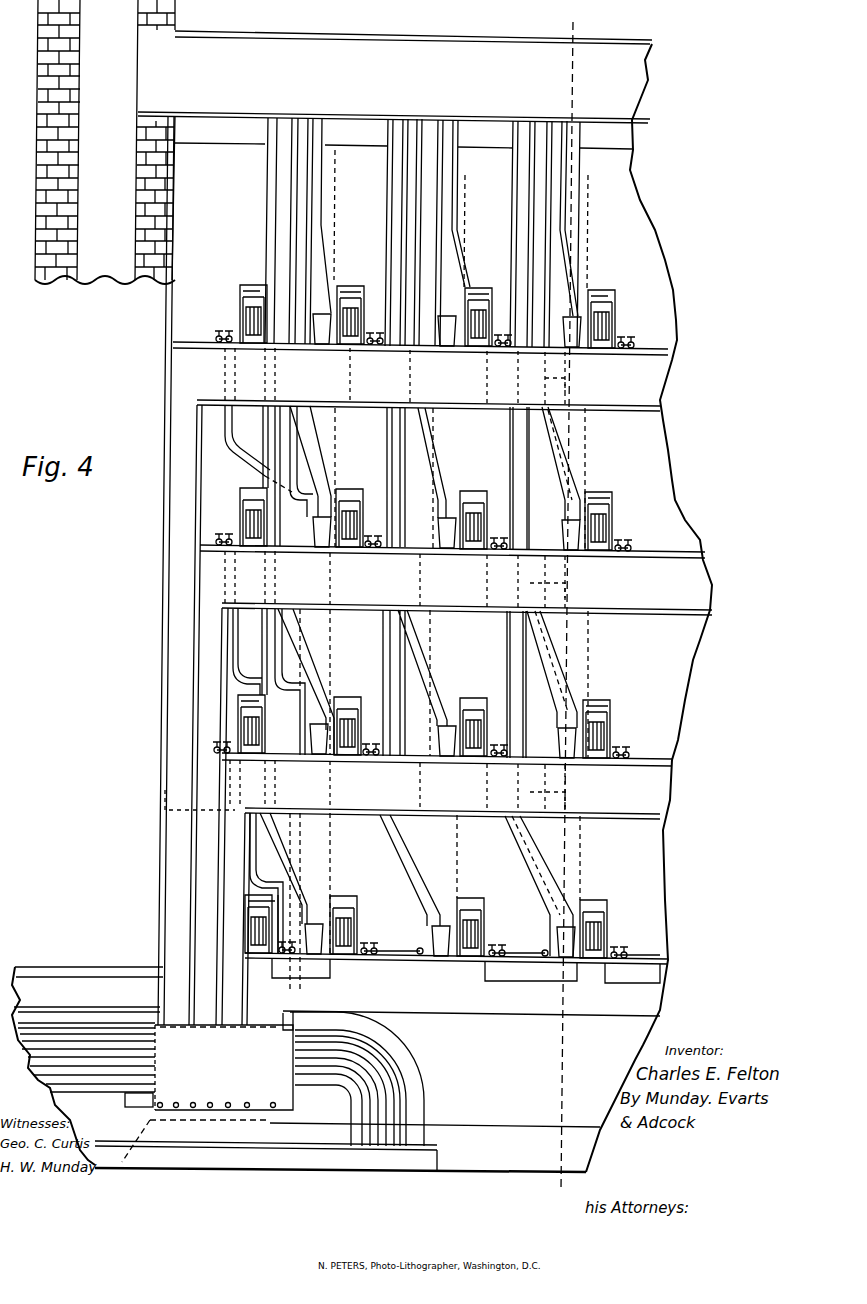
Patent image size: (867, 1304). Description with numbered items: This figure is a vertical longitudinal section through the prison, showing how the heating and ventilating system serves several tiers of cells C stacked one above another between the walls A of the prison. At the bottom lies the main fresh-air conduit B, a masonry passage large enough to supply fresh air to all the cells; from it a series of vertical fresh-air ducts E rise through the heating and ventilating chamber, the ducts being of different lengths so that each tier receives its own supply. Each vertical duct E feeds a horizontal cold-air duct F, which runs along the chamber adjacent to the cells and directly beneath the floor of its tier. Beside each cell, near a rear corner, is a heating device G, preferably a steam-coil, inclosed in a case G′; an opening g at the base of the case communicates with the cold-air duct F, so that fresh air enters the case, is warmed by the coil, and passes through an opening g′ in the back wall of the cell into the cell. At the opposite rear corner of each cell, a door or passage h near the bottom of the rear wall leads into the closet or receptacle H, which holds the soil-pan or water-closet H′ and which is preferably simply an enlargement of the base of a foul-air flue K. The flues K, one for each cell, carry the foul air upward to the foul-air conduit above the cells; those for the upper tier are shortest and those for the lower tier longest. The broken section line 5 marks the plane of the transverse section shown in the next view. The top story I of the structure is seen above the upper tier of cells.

The walls of the prison A is at (178, 262).
The roof / top floor I is at (395, 77).
The section line 5 5 is at (566, 604).
The foul-air flue K is at (268, 210).
The door, opening, or passage h is at (328, 500).
The horizontal fresh or cold air duct F is at (330, 381).
The cells C is at (454, 609).
The vertical fresh-air duct E is at (193, 842).
The heating device G is at (478, 334).
The case G′ is at (240, 308).
The opening or passage g is at (500, 294).
The opening in back plate of cell g′ is at (248, 292).
The closet or receptacle H is at (470, 314).
The soil-pan or water-closet H′ is at (456, 322).
The main fresh-air conduit B is at (336, 1069).